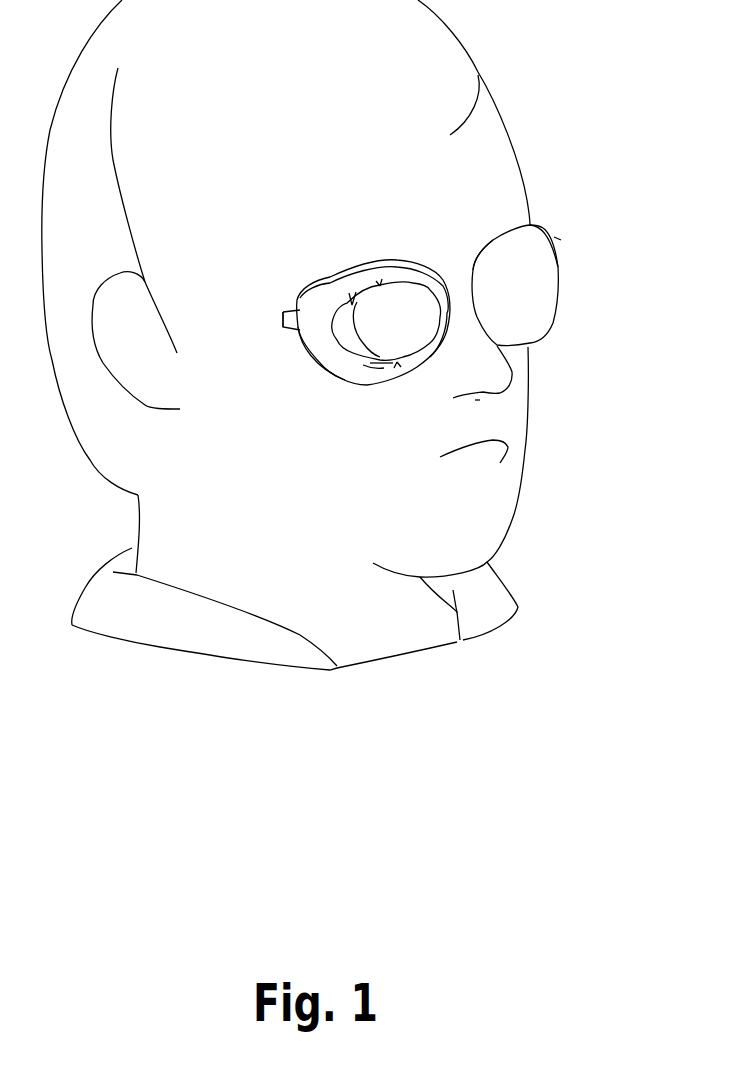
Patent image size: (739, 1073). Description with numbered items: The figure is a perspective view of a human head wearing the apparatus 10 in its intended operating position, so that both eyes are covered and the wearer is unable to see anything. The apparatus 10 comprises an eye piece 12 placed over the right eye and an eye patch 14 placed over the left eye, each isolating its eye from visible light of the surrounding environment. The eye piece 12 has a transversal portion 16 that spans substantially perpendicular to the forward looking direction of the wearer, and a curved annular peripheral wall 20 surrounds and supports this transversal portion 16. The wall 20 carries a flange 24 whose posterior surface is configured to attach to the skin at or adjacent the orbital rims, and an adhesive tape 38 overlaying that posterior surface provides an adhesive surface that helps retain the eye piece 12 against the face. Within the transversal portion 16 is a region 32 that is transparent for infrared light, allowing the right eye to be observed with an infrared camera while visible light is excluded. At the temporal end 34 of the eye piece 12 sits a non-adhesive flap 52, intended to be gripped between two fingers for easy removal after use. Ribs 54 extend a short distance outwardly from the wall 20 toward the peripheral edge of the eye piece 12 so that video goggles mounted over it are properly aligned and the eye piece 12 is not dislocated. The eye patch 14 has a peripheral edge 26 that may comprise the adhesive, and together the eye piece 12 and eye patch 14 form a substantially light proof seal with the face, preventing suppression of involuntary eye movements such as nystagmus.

The apparatus 10 is at (558, 212).
The eye piece 12 is at (313, 340).
The eye patch 14 is at (525, 307).
The transversal portion 16 is at (397, 362).
The curved annular peripheral wall 20 is at (336, 334).
The flange 24 is at (297, 298).
The peripheral edge 26 is at (494, 235).
The region 32 is at (398, 334).
The temporal end 34 is at (285, 327).
The adhesive tape 38 is at (422, 262).
The non-adhesive flap 52 is at (284, 318).
The ribs 54 is at (363, 365).